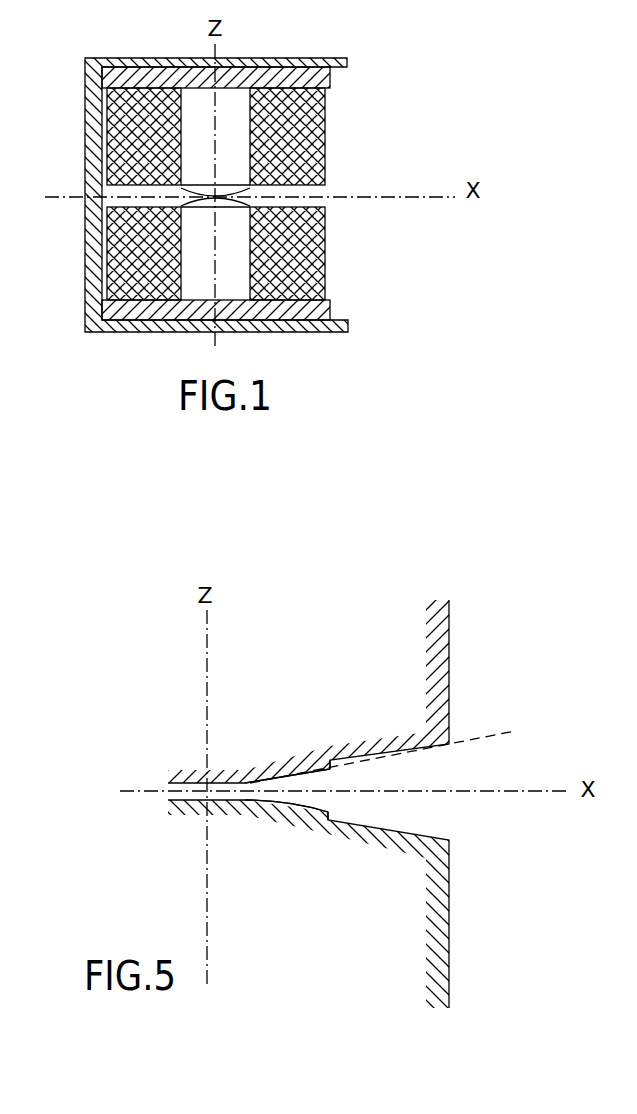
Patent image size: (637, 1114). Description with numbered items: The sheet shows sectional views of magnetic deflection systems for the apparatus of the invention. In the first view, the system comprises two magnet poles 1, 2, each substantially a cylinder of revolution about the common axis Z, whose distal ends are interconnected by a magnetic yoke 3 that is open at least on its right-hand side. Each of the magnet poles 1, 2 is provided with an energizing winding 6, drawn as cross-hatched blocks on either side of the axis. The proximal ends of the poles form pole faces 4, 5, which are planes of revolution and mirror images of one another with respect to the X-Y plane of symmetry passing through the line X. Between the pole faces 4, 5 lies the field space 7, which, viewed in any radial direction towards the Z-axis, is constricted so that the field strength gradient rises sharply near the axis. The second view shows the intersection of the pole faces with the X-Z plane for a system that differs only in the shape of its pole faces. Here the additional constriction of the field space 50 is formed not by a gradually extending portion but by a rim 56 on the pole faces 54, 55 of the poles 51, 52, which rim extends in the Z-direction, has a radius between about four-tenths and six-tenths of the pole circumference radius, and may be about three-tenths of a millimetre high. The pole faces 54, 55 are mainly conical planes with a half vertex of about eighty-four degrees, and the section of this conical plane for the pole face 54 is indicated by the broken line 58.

In FIG. 1, the magnet pole 1 is at (236, 104).
In FIG. 1, the magnet pole 2 is at (232, 253).
In FIG. 1, the magnetic yoke 3 is at (93, 263).
In FIG. 1, the pole face 4 is at (206, 191).
In FIG. 1, the pole face 5 is at (200, 208).
In FIG. 1, the energizing winding 6 is at (301, 117).
In FIG. 1, the field space 7 is at (241, 196).
In FIG. 5, the field space 50 is at (418, 781).
In FIG. 5, the pole 51 is at (450, 637).
In FIG. 5, the pole 52 is at (450, 906).
In FIG. 5, the pole face 54 is at (247, 784).
In FIG. 5, the pole face 55 is at (248, 800).
In FIG. 5, the rim 56 is at (327, 762).
In FIG. 5, the broken line 58 is at (490, 735).